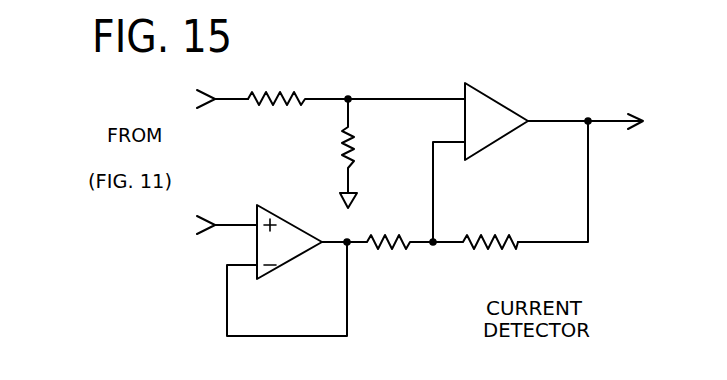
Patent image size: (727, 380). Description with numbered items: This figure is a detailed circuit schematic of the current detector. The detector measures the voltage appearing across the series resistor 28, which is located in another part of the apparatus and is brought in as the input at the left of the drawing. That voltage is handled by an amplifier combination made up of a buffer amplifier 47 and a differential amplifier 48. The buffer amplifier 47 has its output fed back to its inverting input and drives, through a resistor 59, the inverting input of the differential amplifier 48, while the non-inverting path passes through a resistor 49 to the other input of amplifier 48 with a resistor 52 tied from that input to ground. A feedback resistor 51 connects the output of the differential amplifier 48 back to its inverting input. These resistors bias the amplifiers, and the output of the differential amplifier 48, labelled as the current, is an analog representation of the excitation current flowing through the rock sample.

The series resistor 28 is at (167, 162).
The biasing resistor 49 is at (292, 93).
The biasing resistor 52 is at (340, 138).
The differential amplifier 48 is at (498, 100).
The buffer amplifier 47 is at (270, 216).
The resistor 59 is at (393, 235).
The biasing resistor 51 is at (490, 235).